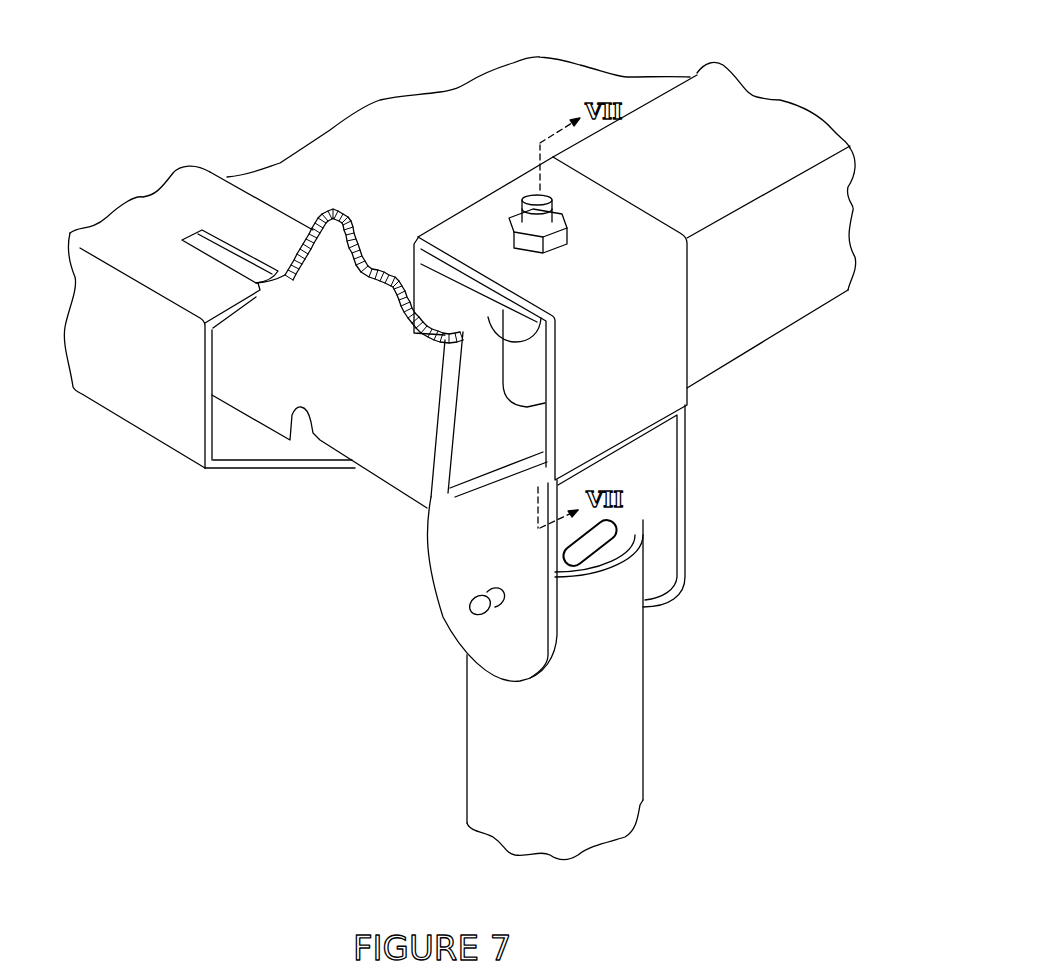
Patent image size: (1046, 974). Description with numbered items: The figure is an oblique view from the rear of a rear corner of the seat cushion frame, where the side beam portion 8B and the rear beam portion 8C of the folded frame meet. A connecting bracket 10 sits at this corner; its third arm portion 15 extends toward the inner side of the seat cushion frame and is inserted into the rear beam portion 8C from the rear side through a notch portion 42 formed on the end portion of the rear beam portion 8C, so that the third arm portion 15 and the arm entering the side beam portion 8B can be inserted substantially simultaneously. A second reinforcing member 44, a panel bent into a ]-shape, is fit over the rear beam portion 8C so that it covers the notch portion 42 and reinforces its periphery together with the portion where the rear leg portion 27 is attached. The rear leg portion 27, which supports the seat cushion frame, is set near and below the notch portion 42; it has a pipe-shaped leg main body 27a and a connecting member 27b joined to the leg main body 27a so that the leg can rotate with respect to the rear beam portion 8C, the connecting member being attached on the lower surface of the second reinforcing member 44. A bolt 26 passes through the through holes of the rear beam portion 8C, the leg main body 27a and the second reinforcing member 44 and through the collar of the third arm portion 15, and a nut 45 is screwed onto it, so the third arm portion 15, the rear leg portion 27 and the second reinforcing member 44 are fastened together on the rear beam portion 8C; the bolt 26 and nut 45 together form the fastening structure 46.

The side beam portion 8B is at (127, 230).
The rear beam portion 8C is at (768, 110).
The connecting bracket 10 is at (303, 273).
The third arm portion 15 is at (477, 460).
The bolt 26 is at (535, 197).
The notch portion 42 is at (486, 300).
The second reinforcing member 44 is at (665, 340).
The nut 45 is at (500, 219).
The fastening structure 46 is at (488, 317).
The rear leg portion 27 is at (465, 723).
The leg main body 27a is at (477, 770).
The connecting member 27b is at (478, 638).